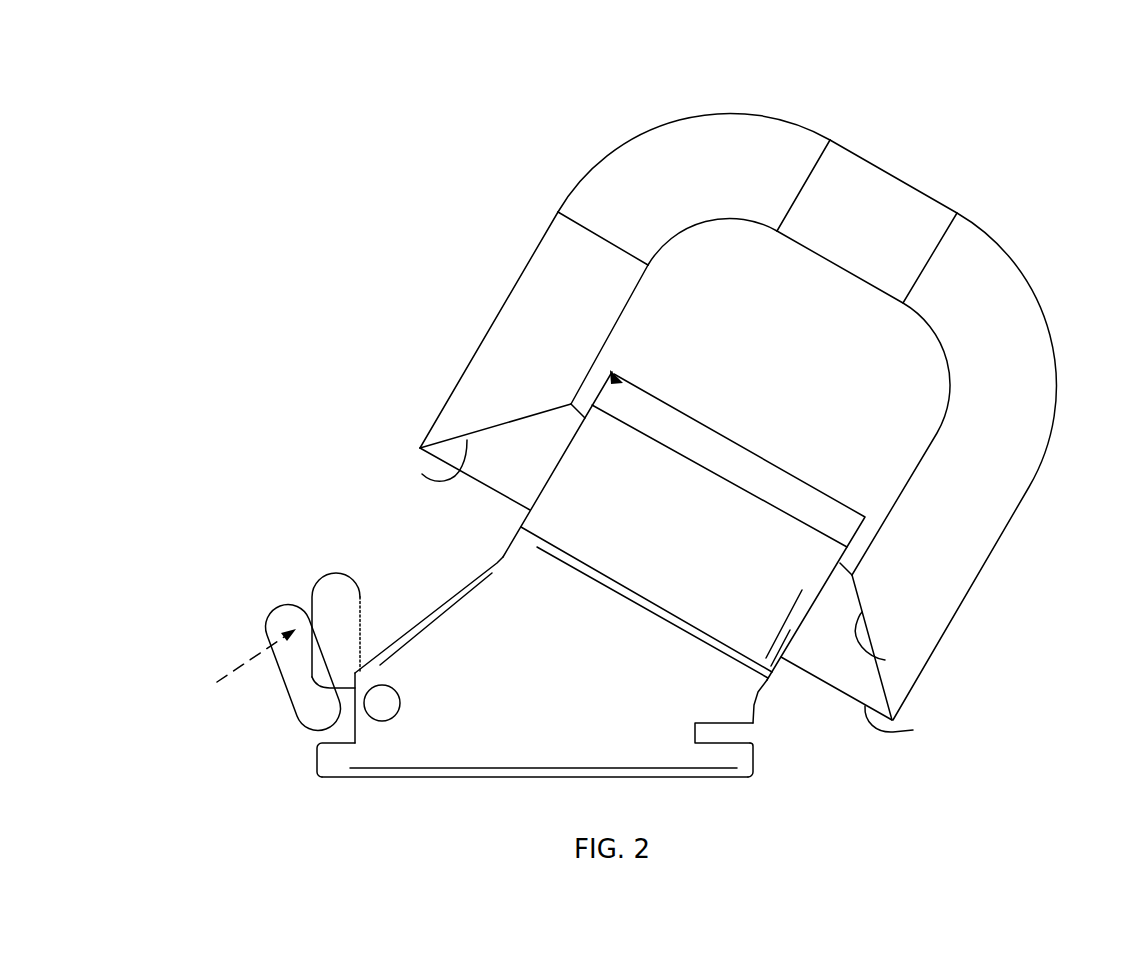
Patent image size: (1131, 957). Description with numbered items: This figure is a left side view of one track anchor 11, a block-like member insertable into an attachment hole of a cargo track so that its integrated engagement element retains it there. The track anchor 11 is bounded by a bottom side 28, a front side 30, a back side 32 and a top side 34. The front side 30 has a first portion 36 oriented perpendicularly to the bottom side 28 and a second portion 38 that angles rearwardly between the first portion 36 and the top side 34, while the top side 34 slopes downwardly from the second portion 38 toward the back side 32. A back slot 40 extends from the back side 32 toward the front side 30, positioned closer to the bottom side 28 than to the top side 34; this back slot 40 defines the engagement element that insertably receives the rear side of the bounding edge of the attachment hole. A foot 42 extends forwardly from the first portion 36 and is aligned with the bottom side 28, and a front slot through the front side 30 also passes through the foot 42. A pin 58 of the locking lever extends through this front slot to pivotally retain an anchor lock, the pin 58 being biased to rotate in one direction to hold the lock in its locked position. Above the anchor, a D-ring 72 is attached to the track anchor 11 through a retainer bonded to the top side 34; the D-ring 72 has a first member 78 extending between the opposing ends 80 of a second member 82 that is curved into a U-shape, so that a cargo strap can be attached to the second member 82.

The track anchor 11 is at (484, 738).
The bottom side 28 is at (413, 777).
The front side 30 is at (397, 640).
The back side 32 is at (765, 691).
The top side 34 is at (567, 554).
The first portion 36 is at (328, 706).
The second portion 38 is at (425, 596).
The back slot 40 is at (732, 737).
The foot 42 is at (317, 760).
The pin 58 is at (383, 712).
The D-ring 72 is at (1080, 322).
The first member 78 is at (913, 730).
The opposing ends 80 is at (422, 474).
The second member 82 is at (605, 153).